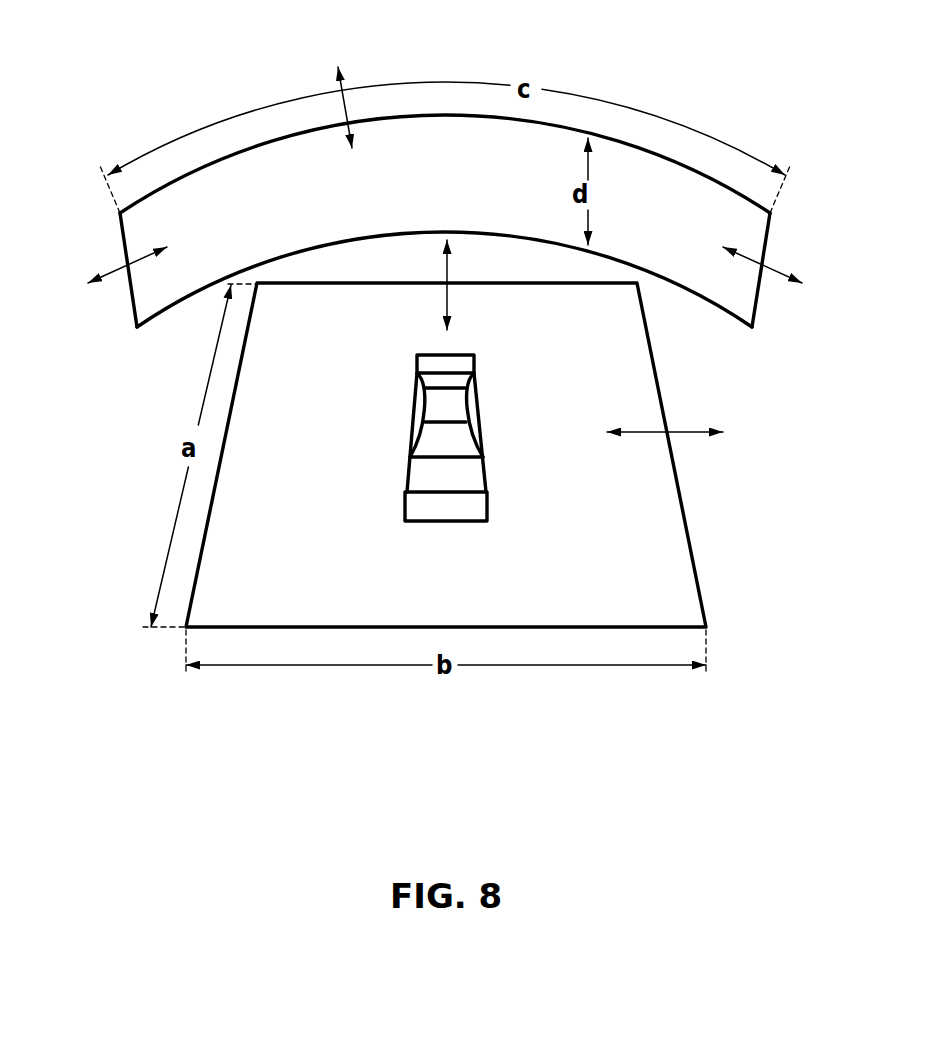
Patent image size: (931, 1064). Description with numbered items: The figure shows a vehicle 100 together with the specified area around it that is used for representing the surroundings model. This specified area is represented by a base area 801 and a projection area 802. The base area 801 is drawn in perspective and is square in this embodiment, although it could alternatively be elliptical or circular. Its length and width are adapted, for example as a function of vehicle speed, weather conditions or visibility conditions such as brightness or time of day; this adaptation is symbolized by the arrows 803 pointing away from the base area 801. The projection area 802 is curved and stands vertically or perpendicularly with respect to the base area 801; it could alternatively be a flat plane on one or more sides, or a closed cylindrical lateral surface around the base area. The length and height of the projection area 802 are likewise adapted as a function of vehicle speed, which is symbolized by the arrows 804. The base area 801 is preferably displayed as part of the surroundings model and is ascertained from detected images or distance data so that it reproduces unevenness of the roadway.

The vehicle 100 is at (387, 449).
The base area 801 is at (502, 455).
The projection area 802 is at (445, 221).
The arrows 803 is at (611, 336).
The arrows 804 is at (448, 154).